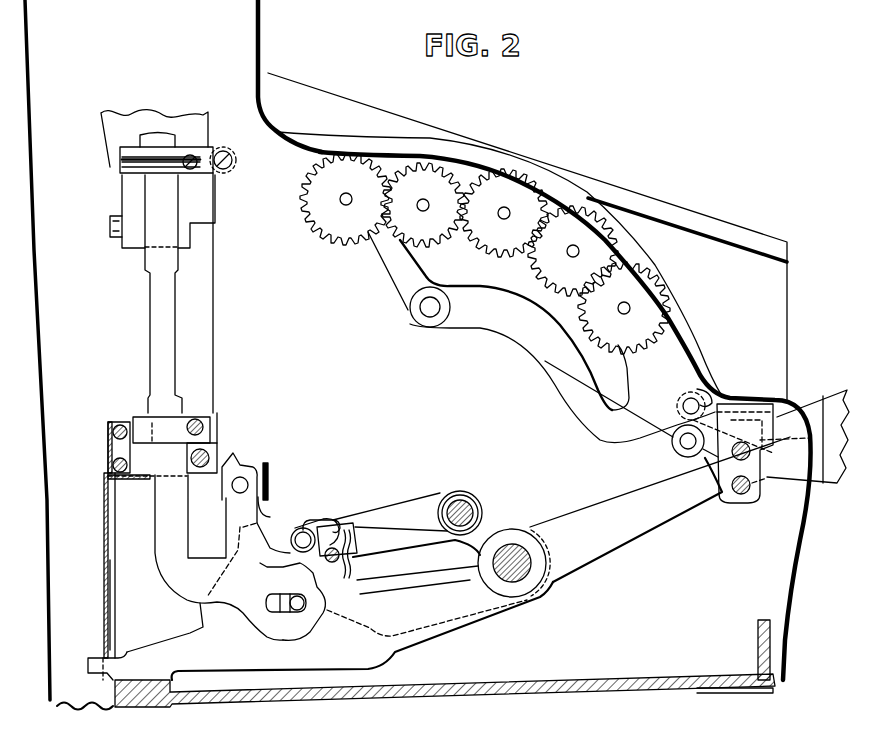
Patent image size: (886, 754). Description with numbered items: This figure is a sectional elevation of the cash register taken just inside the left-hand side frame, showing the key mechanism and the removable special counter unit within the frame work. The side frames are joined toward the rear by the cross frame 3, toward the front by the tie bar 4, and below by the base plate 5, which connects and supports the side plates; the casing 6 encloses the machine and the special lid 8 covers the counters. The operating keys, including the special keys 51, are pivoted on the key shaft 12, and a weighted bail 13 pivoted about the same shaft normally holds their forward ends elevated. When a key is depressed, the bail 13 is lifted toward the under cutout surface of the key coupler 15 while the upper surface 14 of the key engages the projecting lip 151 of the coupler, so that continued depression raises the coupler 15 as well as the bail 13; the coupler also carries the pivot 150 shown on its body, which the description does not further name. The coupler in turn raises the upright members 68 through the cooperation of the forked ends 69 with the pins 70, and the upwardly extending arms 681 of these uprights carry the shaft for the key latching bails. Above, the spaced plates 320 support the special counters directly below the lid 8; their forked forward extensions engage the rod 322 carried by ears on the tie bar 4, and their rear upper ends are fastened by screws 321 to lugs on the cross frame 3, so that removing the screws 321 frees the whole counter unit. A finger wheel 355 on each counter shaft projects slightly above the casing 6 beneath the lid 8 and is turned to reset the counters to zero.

The cross frame 3 is at (208, 208).
The tie bar 4 is at (753, 404).
The base plate 5 is at (523, 678).
The casing 6 is at (262, 30).
The special lid 8 is at (490, 160).
The key shaft 12 is at (526, 582).
The weighted bail 13 is at (388, 585).
The upper surface 14 is at (323, 620).
The key coupler 15 is at (385, 523).
The upright members 68 is at (157, 531).
The forked ends 69 is at (283, 632).
The pins 70 is at (304, 598).
The pivot pin 150 is at (462, 500).
The projecting lip 151 is at (345, 572).
The spaced plates 320 is at (556, 391).
The screws 321 is at (224, 172).
The rod 322 is at (682, 398).
The finger wheel 355 is at (483, 259).
The upwardly extending arms 681 is at (227, 502).
The special keys 51 is at (823, 400).